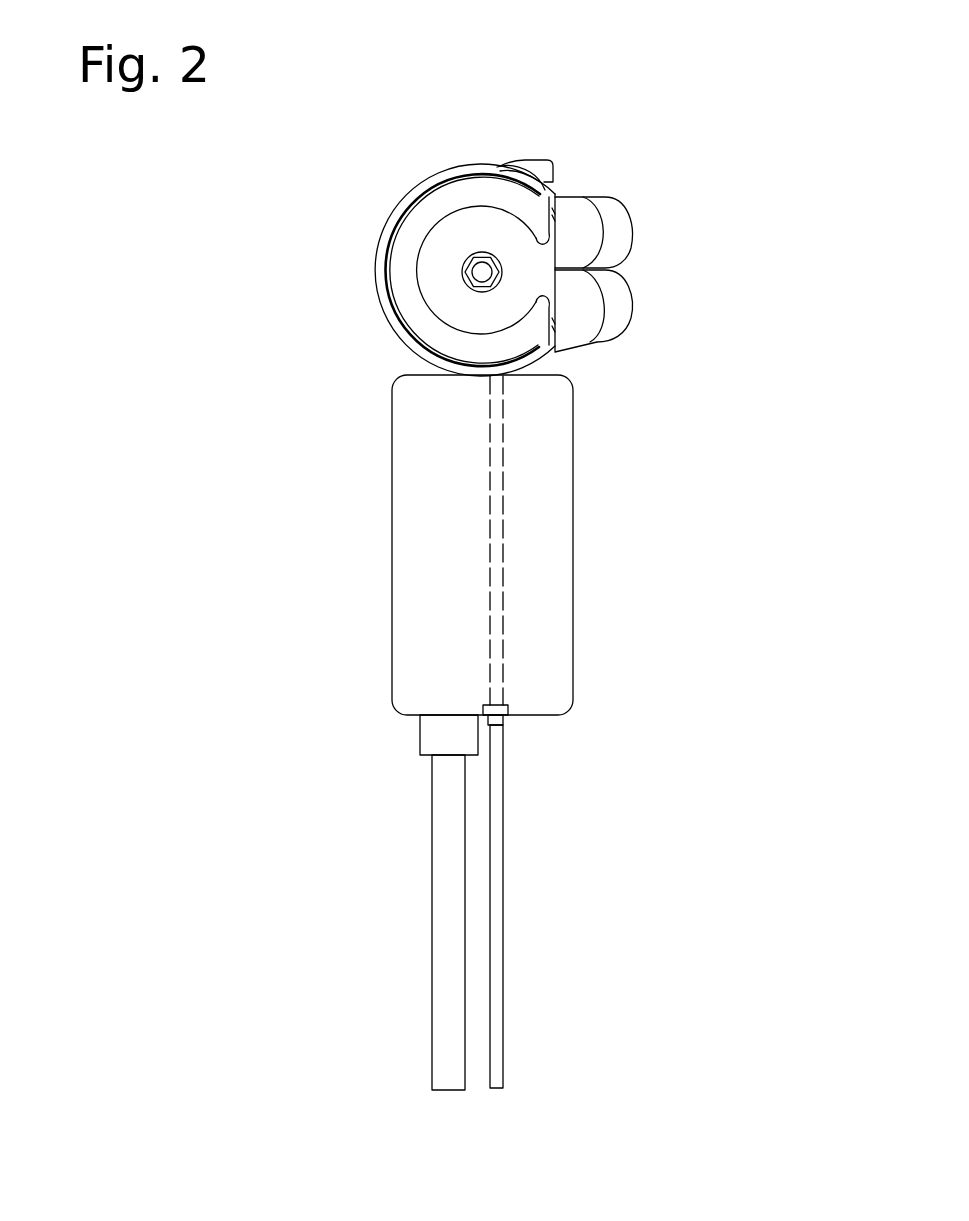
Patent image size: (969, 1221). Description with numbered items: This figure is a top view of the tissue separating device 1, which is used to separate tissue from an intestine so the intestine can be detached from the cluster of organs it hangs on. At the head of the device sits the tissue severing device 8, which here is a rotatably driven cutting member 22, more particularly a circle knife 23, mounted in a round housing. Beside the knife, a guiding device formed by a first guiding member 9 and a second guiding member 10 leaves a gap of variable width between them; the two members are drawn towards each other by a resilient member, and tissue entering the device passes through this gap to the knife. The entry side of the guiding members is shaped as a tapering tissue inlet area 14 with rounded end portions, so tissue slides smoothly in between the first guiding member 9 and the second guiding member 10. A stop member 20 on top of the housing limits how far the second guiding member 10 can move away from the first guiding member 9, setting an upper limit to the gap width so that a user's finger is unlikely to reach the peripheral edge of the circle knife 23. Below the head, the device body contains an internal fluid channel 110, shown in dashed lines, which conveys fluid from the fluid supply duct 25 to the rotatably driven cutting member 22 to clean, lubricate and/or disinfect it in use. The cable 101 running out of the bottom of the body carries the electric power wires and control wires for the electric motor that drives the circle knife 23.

The tissue separating device 1 is at (534, 109).
The tissue severing device 8 is at (435, 310).
The first guiding member 9 is at (582, 308).
The second guiding member 10 is at (582, 222).
The tapering tissue inlet area 14 is at (634, 273).
The stop member 20 is at (553, 172).
The rotatably driven cutting member 22 is at (433, 287).
The circle knife 23 is at (517, 310).
The fluid supply duct 25 is at (503, 873).
The cable 101 is at (443, 876).
The internal fluid channel 110 is at (503, 552).